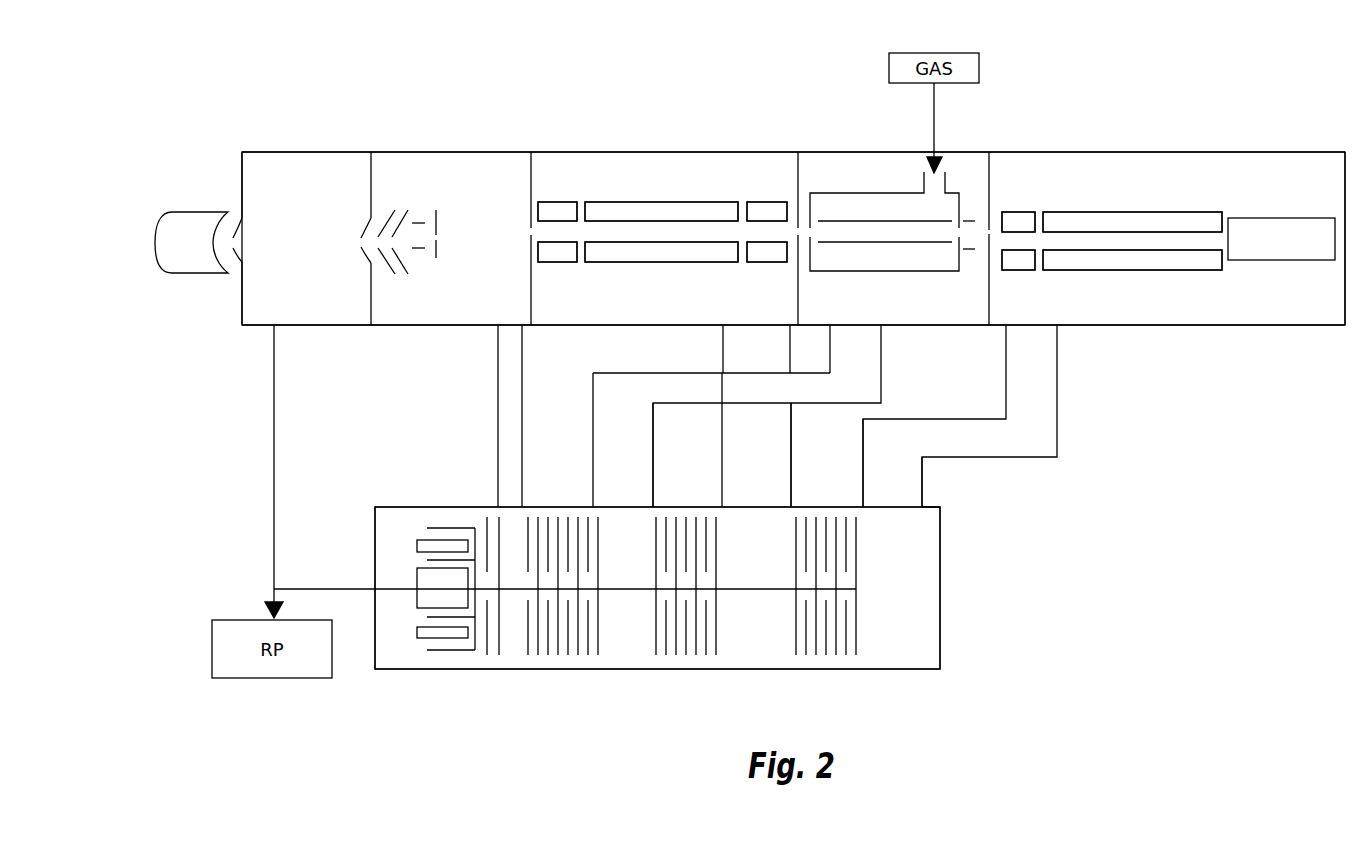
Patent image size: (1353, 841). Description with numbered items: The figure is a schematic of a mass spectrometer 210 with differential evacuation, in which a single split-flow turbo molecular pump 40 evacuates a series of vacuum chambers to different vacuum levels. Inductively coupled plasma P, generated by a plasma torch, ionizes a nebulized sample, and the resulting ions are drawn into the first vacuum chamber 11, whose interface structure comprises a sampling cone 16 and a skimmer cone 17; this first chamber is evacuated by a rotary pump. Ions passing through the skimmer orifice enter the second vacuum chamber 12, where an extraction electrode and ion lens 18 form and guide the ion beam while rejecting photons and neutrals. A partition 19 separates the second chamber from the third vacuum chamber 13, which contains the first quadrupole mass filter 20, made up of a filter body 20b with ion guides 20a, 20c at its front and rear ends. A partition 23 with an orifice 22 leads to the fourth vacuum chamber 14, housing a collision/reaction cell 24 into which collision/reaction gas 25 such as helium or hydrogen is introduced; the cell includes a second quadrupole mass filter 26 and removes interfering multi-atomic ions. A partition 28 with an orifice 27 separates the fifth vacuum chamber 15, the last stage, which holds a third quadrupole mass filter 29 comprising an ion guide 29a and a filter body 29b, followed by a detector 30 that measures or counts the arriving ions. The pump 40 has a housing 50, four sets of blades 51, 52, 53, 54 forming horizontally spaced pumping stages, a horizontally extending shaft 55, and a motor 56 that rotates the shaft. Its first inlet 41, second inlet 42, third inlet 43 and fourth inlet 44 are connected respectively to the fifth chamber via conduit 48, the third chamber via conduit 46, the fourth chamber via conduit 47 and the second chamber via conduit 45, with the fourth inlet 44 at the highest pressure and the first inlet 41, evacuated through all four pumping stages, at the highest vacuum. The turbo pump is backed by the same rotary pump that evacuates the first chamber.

The mass spectrometer 210 is at (1156, 66).
The inductively coupled plasma P is at (158, 243).
The first vacuum chamber 11 is at (338, 157).
The second vacuum chamber 12 is at (451, 157).
The third vacuum chamber 13 is at (666, 157).
The fourth vacuum chamber 14 is at (882, 158).
The fifth vacuum chamber 15 is at (1081, 158).
The sampling cone 16 is at (233, 265).
The skimmer cone 17 is at (362, 253).
The extraction electrode and ion lens 18 is at (403, 270).
The partition 19 is at (531, 180).
The first quadrupole mass filter 20 is at (663, 262).
The ion guide 20a is at (550, 262).
The filter body 20b is at (608, 262).
The ion guide 20c is at (758, 262).
The orifice 22 is at (797, 233).
The partition 23 is at (798, 168).
The collision/reaction cell 24 is at (897, 271).
The collision/reaction gas 25 is at (934, 108).
The second quadrupole mass filter 26 is at (836, 243).
The orifice 27 is at (988, 232).
The partition 28 is at (988, 288).
The third quadrupole mass filter 29 is at (1130, 212).
The ion guide 29a is at (1021, 270).
The filter body 29b is at (1101, 270).
The detector 30 is at (1277, 224).
The split-flow turbo molecular pump 40 is at (702, 682).
The first inlet 41 is at (890, 506).
The second inlet 42 is at (752, 506).
The third inlet 43 is at (622, 506).
The fourth inlet 44 is at (511, 505).
The conduit 45 is at (522, 368).
The conduit 46 is at (777, 434).
The conduit 47 is at (593, 434).
The conduit 48 is at (1055, 410).
The housing 50 is at (884, 672).
The set of blades 51 is at (814, 645).
The set of blades 52 is at (675, 645).
The set of blades 53 is at (556, 648).
The set of blades 54 is at (497, 648).
The shaft 55 is at (760, 590).
The motor 56 is at (421, 584).